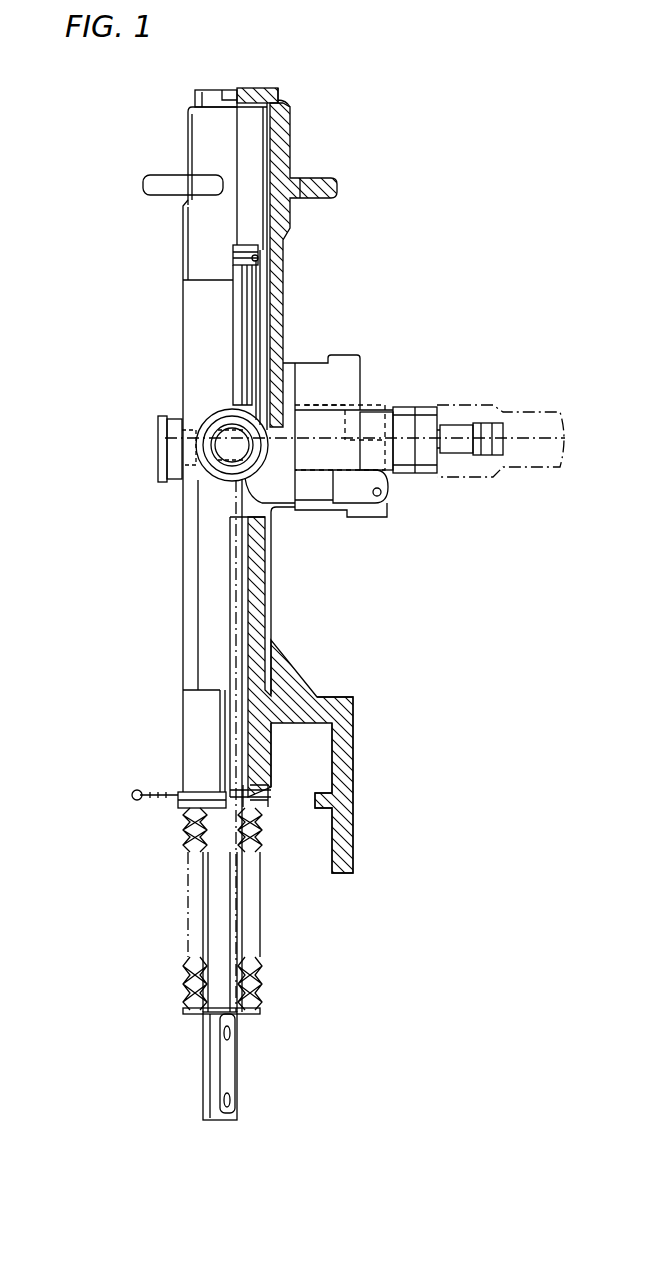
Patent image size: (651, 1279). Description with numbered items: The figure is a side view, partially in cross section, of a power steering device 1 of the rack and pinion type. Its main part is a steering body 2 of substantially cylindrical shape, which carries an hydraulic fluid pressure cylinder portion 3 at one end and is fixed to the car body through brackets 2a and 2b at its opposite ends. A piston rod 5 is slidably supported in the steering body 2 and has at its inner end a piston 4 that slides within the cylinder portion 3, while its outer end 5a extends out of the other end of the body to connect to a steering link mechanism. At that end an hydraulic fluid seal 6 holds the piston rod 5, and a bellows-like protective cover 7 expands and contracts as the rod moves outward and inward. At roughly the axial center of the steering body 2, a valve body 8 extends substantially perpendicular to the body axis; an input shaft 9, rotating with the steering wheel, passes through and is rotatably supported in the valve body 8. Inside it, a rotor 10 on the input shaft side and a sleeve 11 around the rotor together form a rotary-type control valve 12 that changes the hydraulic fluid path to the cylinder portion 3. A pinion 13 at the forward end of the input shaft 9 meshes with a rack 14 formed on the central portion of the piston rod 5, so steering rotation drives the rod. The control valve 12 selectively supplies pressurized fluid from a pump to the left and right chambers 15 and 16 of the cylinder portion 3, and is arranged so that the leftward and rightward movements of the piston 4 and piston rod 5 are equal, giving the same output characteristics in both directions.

The power steering device 1 is at (290, 67).
The steering body 2 is at (192, 567).
The bracket 2a is at (353, 806).
The bracket 2b is at (157, 178).
The hydraulic fluid pressure cylinder portion 3 is at (275, 232).
The piston 4 is at (262, 256).
The piston rod 5 is at (232, 337).
The outer end of the piston rod 5a is at (232, 1080).
The hydraulic fluid seal 6 is at (263, 793).
The bellows-like protective cover 7 is at (260, 977).
The valve body 8 is at (319, 508).
The input shaft 9 is at (470, 418).
The rotor 10 is at (385, 408).
The sleeve 11 is at (372, 408).
The rotary-type control valve 12 is at (423, 303).
The pinion 13 is at (210, 414).
The rack 14 is at (233, 540).
The left chamber 15 is at (260, 291).
The right chamber 16 is at (255, 180).